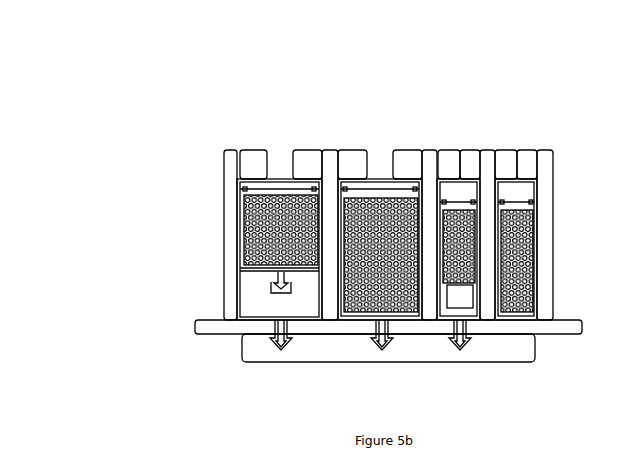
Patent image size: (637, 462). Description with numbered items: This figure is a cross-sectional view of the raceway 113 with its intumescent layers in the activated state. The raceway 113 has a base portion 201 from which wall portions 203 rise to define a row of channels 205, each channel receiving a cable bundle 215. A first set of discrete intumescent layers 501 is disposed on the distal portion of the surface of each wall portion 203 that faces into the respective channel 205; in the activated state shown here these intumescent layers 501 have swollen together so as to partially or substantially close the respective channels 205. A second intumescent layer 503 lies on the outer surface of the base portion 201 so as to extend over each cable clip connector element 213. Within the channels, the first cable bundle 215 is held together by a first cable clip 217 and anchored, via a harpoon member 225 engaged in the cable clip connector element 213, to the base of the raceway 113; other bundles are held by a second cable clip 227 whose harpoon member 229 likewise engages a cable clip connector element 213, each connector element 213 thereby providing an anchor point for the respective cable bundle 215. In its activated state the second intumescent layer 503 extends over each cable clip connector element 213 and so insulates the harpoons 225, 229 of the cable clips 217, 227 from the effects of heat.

The raceway 113 is at (233, 328).
The base portion 201 is at (333, 328).
The wall portion 203 is at (330, 160).
The channel 205 is at (283, 157).
The cable clip connector element 213 is at (465, 322).
The cable bundle 215 is at (247, 253).
The first cable clip 217 is at (251, 271).
The harpoon member 225 is at (285, 350).
The second cable clip 227 is at (350, 315).
The harpoon member 229 is at (383, 350).
The intumescent layer 501 is at (450, 162).
The intumescent layer 503 is at (516, 348).